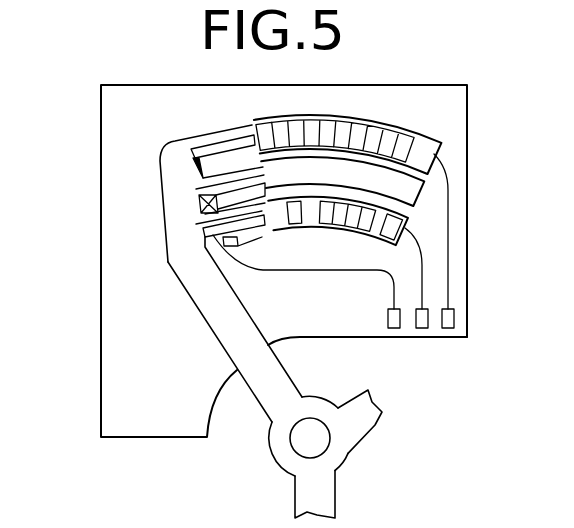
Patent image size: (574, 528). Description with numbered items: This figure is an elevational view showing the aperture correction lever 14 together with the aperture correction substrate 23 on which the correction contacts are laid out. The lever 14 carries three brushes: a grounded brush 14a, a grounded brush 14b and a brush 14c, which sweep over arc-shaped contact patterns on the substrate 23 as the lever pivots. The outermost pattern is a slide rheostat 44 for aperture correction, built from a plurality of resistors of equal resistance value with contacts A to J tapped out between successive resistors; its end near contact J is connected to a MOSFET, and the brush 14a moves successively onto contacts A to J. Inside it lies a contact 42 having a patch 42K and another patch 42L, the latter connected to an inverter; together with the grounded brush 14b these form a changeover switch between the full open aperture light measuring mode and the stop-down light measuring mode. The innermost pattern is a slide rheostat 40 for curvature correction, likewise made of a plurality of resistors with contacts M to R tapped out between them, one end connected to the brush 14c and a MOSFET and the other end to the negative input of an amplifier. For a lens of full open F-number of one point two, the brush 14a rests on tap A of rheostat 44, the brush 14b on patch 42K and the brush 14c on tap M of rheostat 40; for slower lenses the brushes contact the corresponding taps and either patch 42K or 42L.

The aperture correction lever 14 is at (255, 306).
The brush 14a is at (247, 125).
The brush 14b is at (196, 186).
The brush 14c is at (200, 227).
The aperture correction substrate 23 is at (100, 112).
The slide rheostat for curvature correction 40 is at (404, 220).
The contact 42 is at (356, 212).
The patch 42K is at (342, 181).
The patch 42L is at (200, 207).
The slide rheostat for aperture correction 44 is at (430, 140).